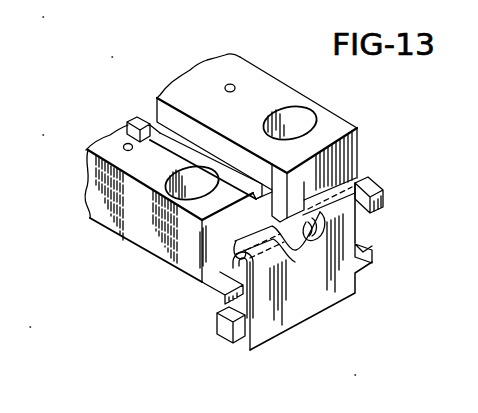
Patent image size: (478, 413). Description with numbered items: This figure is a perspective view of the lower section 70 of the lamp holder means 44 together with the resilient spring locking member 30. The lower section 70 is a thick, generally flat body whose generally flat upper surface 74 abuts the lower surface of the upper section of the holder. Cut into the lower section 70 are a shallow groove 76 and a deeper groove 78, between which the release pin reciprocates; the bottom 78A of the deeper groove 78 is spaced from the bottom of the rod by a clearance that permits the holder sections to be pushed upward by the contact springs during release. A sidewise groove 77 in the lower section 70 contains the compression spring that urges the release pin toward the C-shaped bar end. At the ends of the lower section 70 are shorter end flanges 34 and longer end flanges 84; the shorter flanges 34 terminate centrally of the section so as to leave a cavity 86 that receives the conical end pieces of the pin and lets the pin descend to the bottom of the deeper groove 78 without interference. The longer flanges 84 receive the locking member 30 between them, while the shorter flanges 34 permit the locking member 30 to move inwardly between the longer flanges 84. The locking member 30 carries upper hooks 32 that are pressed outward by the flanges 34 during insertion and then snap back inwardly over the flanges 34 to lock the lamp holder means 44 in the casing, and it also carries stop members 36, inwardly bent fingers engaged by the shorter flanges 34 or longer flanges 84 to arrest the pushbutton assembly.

The spring locking member 30 is at (316, 306).
The hook 32 is at (338, 195).
The shorter end flange 34 is at (373, 173).
The stop member 36 is at (217, 333).
The lamp holder means 44 is at (113, 243).
The lower section 70 is at (252, 65).
The upper surface 74 is at (100, 148).
The shallow groove 76 is at (225, 167).
The sidewise groove 77 is at (127, 126).
The deeper groove 78 is at (290, 212).
The bottom of the groove 78A is at (281, 205).
The longer end flange 84 is at (386, 189).
The cavity 86 is at (288, 240).